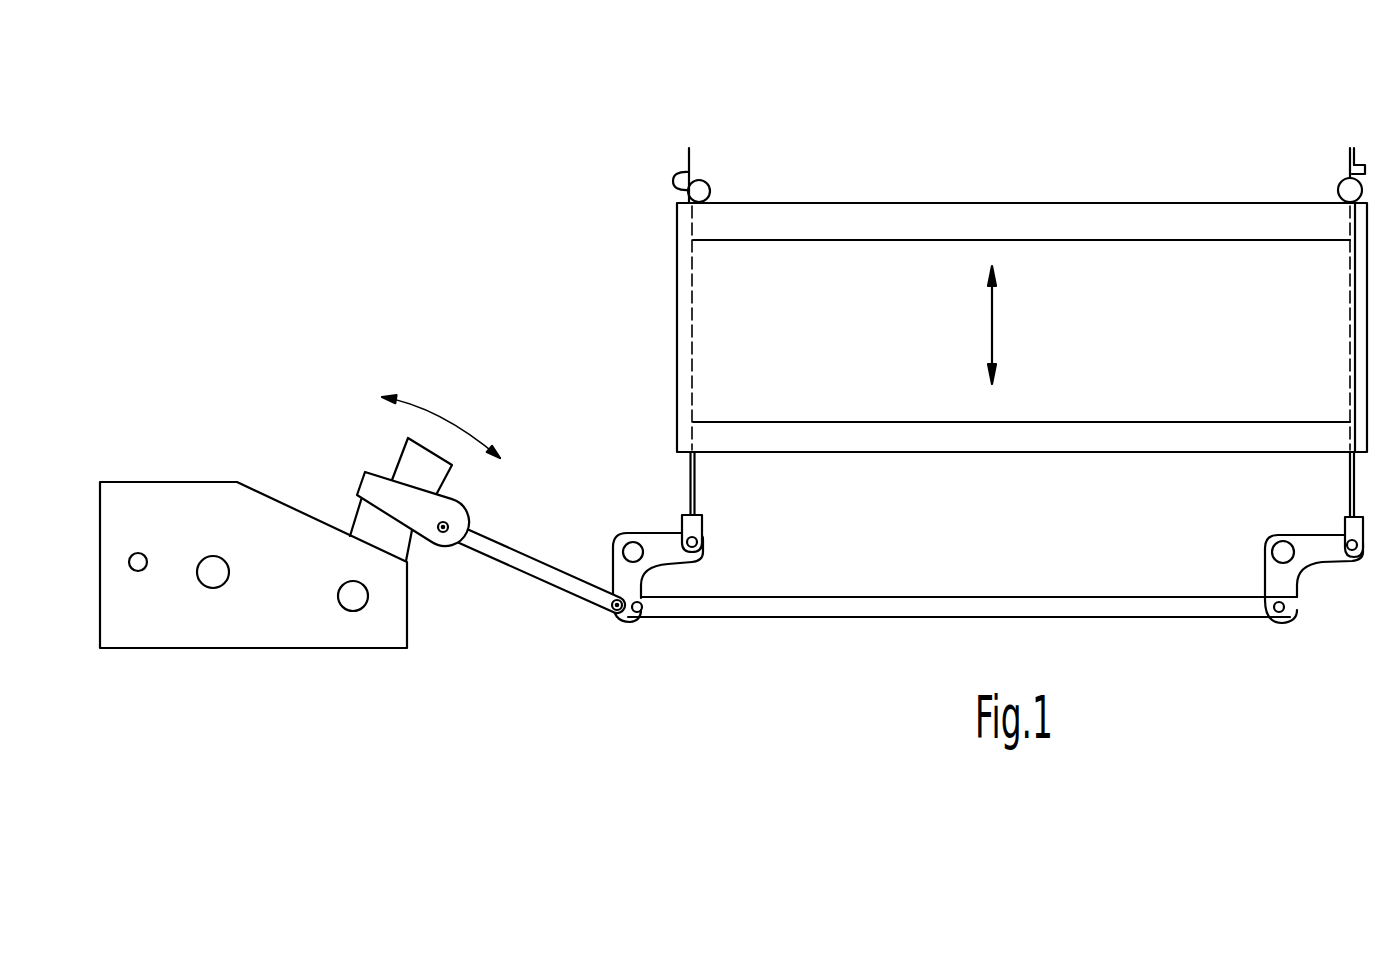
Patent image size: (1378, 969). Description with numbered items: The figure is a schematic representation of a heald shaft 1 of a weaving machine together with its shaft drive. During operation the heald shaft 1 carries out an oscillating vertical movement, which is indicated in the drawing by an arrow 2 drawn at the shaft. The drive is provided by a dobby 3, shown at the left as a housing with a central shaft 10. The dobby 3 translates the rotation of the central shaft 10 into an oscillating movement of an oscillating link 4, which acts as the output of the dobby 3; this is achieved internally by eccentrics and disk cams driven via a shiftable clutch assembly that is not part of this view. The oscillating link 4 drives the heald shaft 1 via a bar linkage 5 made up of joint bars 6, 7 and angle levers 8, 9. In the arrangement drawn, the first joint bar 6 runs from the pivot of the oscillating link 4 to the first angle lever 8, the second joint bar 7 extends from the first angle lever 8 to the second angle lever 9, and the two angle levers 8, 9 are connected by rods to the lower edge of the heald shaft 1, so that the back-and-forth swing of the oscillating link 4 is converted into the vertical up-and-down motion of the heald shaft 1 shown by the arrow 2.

The heald shaft 1 is at (1085, 150).
The arrow 2 is at (993, 325).
The dobby 3 is at (308, 372).
The oscillating link 4 is at (395, 459).
The bar linkage 5 is at (760, 637).
The joint bar 6 is at (507, 553).
The joint bar 7 is at (942, 607).
The angle lever 8 is at (658, 550).
The angle lever 9 is at (1308, 547).
The central shaft 10 is at (229, 562).